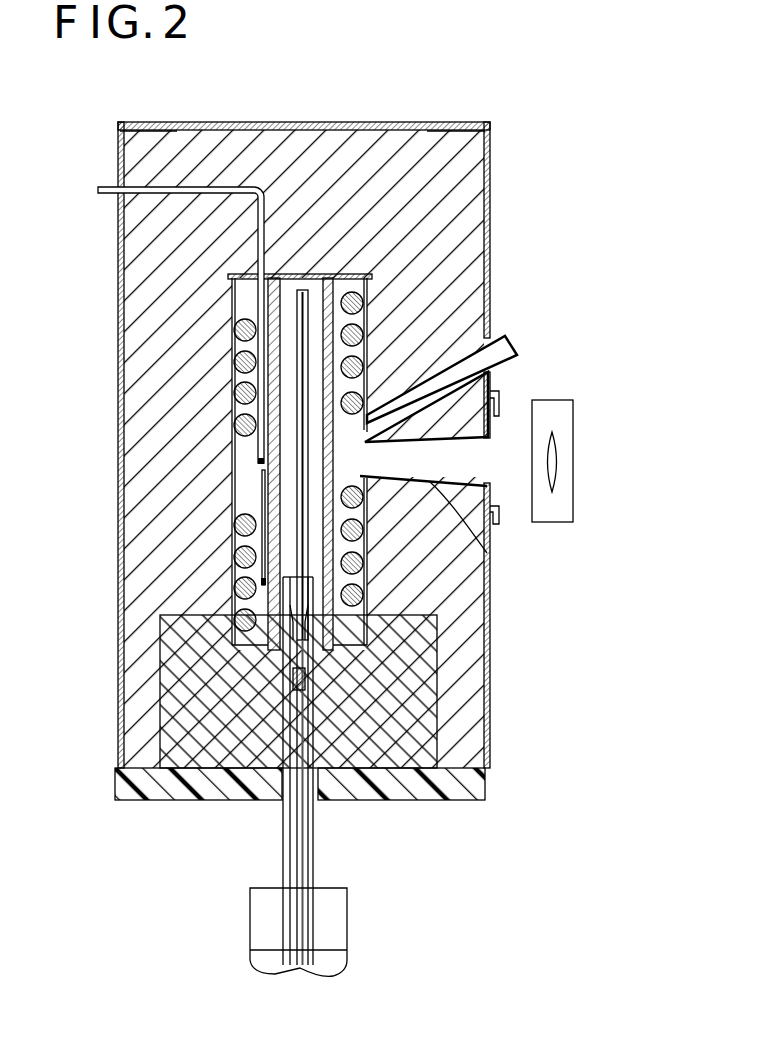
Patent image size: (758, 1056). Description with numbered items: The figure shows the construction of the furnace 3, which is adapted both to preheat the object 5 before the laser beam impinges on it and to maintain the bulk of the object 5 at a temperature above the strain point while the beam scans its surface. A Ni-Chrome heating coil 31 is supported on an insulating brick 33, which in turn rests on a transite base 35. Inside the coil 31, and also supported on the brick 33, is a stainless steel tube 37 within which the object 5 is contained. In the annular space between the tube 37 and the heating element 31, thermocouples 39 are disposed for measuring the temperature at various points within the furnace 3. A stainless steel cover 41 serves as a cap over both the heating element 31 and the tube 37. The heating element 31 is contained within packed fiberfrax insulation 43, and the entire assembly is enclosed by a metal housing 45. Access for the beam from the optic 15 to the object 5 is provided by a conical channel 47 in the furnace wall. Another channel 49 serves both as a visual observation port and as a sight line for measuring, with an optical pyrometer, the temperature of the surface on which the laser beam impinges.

The furnace 3 is at (488, 170).
The object 5 is at (290, 483).
The optic 15 is at (555, 468).
The Ni-Chrome heating coil 31 is at (372, 312).
The insulating brick 33 is at (398, 735).
The transite base 35 is at (222, 783).
The stainless steel tube 37 is at (337, 293).
The thermocouples 39 is at (253, 303).
The stainless steel cover 41 is at (327, 276).
The packed fiberfrax insulation 43 is at (182, 348).
The metal housing 45 is at (120, 683).
The conical channel 47 is at (487, 553).
The channel 49 is at (513, 357).